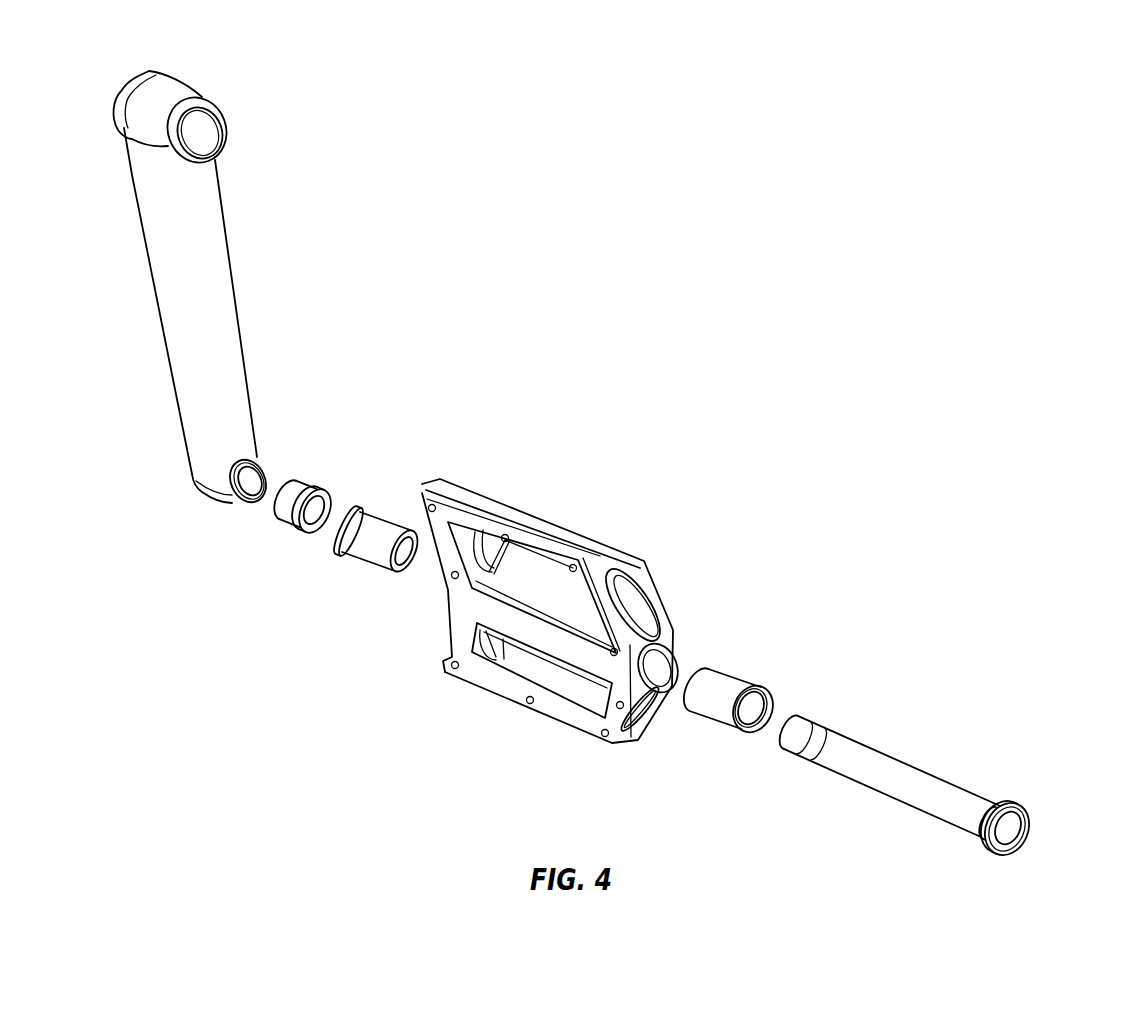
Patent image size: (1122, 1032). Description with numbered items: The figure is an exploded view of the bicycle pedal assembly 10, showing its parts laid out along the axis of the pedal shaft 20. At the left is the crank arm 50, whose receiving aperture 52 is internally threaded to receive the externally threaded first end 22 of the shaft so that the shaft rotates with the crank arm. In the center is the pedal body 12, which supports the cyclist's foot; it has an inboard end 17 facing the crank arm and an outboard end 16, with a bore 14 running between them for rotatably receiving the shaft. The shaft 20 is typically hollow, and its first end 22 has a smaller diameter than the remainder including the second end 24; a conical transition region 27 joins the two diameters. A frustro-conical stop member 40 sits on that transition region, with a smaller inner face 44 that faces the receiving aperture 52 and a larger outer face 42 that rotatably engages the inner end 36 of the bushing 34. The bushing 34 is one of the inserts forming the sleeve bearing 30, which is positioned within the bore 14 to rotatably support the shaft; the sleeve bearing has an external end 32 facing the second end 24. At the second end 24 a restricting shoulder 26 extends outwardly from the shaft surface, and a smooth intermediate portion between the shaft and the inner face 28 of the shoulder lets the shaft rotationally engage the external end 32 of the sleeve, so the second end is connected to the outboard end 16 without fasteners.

The bicycle pedal assembly 10 is at (552, 594).
The pedal body 12 is at (552, 611).
The bore 14 is at (652, 662).
The outboard end 16 is at (663, 623).
The inboard end 17 is at (445, 665).
The pedal shaft 20 is at (907, 785).
The first end 22 is at (788, 738).
The second end 24 is at (977, 795).
The restricting shoulder 26 is at (1023, 840).
The conical transition region 27 is at (818, 735).
The inner face 28 is at (983, 823).
The sleeve bearing 30 is at (752, 693).
The external end 32 is at (773, 702).
The bushing 34 is at (372, 531).
The inner end 36 is at (350, 507).
The frustro-conical stop member 40 is at (287, 497).
The outer face 42 is at (318, 488).
The inner face 44 is at (295, 486).
The crank arm 50 is at (199, 308).
The receiving aperture 52 is at (259, 503).